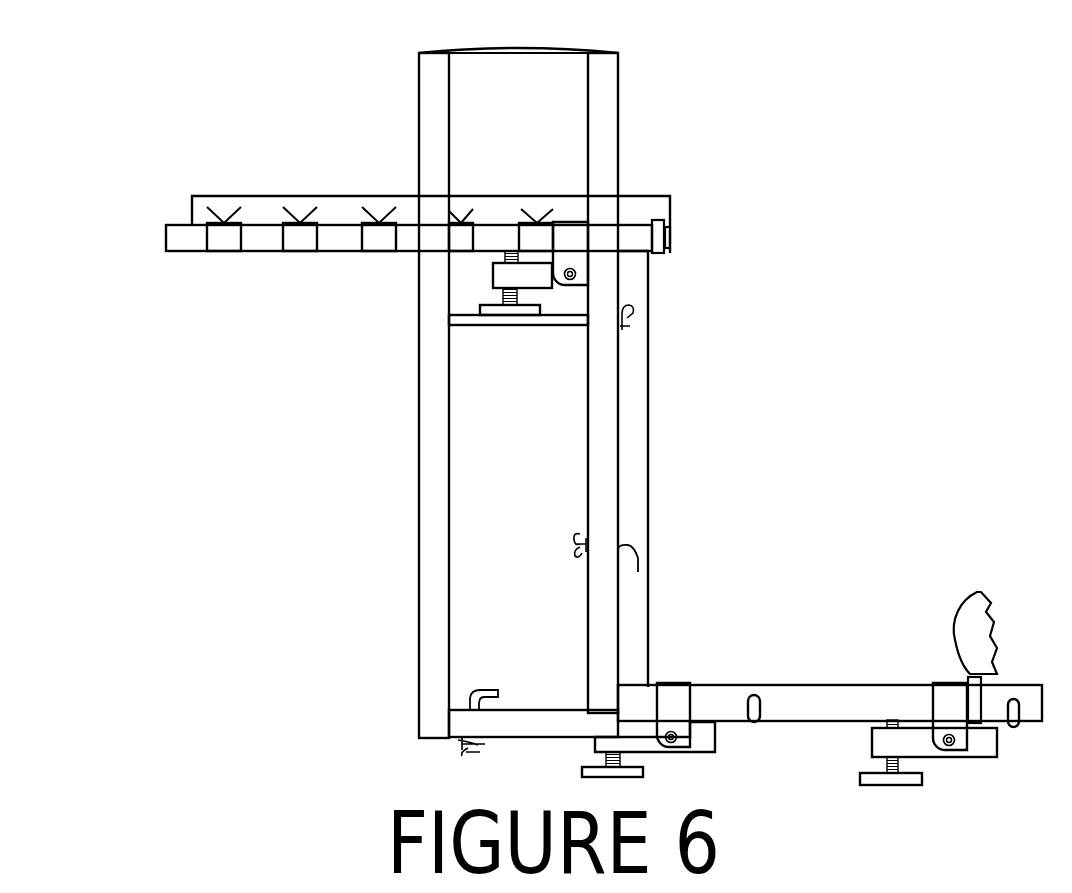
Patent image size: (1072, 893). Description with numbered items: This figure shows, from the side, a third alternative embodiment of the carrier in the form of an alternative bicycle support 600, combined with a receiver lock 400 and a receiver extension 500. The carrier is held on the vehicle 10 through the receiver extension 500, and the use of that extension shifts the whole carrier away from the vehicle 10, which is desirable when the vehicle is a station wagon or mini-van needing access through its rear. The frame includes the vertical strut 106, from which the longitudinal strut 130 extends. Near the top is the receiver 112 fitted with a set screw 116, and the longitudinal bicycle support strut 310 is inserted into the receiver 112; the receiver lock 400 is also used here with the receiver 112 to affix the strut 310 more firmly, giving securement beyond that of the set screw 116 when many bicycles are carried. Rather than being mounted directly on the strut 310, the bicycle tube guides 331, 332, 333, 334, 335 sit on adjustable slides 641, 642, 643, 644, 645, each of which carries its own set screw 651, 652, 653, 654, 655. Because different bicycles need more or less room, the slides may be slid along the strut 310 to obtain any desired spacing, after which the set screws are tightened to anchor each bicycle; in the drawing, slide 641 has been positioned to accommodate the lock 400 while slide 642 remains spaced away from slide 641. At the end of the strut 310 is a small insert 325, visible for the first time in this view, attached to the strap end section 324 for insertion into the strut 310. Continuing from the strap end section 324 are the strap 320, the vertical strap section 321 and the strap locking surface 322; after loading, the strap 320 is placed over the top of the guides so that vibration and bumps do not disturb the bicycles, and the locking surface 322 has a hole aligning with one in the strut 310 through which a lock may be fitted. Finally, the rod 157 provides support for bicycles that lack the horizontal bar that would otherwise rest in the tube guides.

The vehicle 10 is at (980, 627).
The vertical strut 106 is at (607, 450).
The receiver 112 is at (630, 243).
The set screw 116 is at (659, 217).
The longitudinal strut 130 is at (462, 52).
The rod 157 is at (547, 246).
The longitudinal bicycle support strut 310 is at (168, 250).
The strap 320 is at (216, 196).
The vertical strap section 321 is at (195, 222).
The strap locking surface 322 is at (178, 223).
The strap end section 324 is at (673, 210).
The small insert 325 is at (670, 250).
The tube guide 331 is at (544, 213).
The tube guide 332 is at (468, 215).
The tube guide 333 is at (379, 221).
The tube guide 334 is at (300, 221).
The tube guide 335 is at (224, 221).
The receiver lock 400 is at (500, 282).
The receiver extension 500 is at (852, 693).
The alternative bicycle support 600 is at (654, 180).
The adjustable slide 641 is at (555, 285).
The adjustable slide 642 is at (461, 247).
The adjustable slide 643 is at (380, 240).
The adjustable slide 644 is at (304, 240).
The adjustable slide 645 is at (232, 240).
The set screw 651 is at (537, 238).
The set screw 652 is at (456, 238).
The set screw 653 is at (370, 240).
The set screw 654 is at (292, 240).
The set screw 655 is at (222, 240).